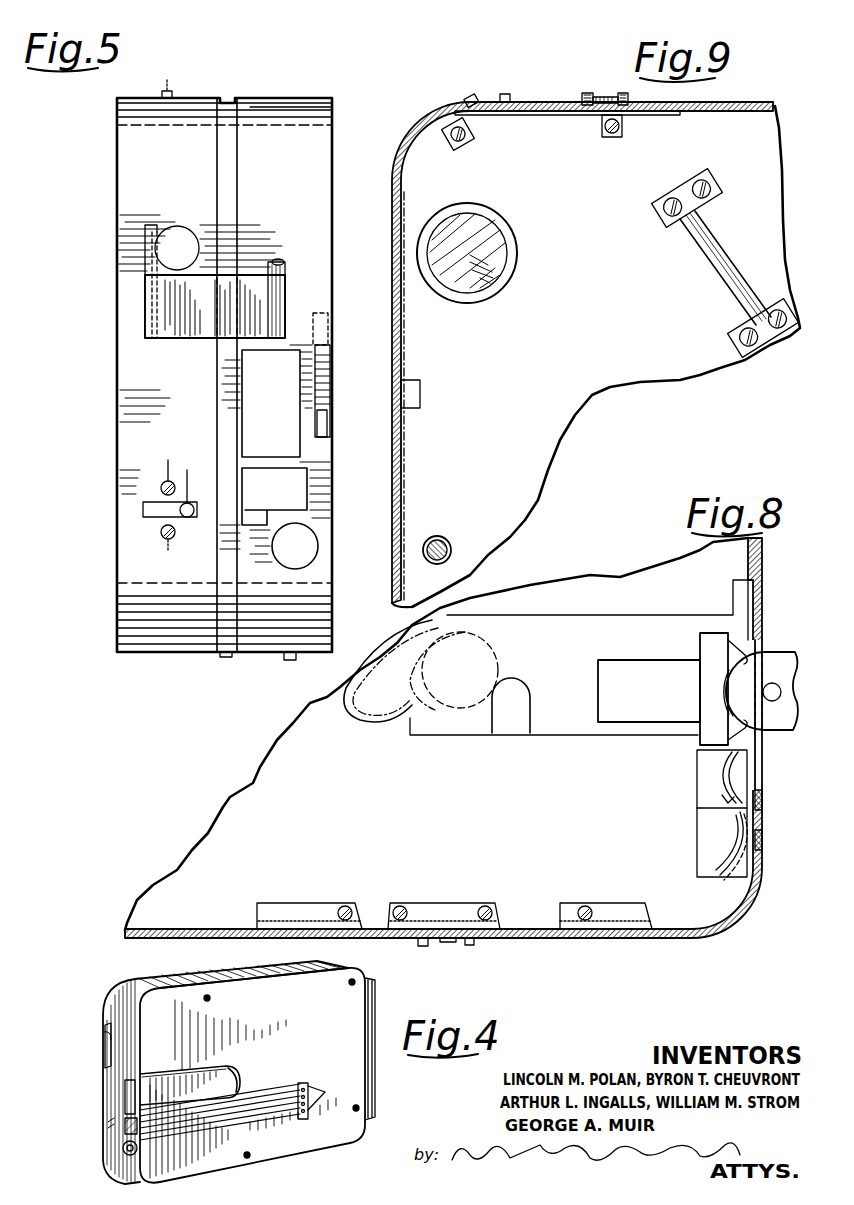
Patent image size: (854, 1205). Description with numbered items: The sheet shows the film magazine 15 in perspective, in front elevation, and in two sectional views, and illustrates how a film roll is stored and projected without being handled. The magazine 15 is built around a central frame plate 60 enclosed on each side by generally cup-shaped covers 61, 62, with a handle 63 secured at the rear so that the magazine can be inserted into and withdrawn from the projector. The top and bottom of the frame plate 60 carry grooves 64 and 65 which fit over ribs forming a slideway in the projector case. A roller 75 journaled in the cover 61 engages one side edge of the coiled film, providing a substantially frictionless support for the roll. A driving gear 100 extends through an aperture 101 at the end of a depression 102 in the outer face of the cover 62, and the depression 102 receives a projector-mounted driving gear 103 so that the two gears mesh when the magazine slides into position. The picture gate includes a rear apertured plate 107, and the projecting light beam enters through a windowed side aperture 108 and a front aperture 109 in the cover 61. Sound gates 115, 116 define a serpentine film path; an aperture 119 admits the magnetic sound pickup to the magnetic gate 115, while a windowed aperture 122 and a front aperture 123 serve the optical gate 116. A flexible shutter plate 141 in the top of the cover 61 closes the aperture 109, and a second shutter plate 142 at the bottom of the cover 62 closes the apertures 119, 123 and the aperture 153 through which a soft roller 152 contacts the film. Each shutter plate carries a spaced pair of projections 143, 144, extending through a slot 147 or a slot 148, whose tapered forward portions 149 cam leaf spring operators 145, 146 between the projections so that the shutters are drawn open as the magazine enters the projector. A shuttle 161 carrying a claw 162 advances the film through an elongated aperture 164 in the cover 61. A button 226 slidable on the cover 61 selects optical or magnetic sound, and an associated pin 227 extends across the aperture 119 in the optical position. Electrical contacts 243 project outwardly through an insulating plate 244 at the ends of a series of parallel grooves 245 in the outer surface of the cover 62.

In FIG. 5, the magazine 15 is at (336, 112).
In FIG. 4, the magazine 15 is at (318, 1155).
In FIG. 5, the cover 61 is at (120, 165).
In FIG. 9, the cover 61 is at (586, 398).
In FIG. 4, the cover 61 is at (122, 985).
In FIG. 5, the cover 62 is at (300, 104).
In FIG. 8, the cover 62 is at (590, 580).
In FIG. 4, the cover 62 is at (343, 974).
In FIG. 5, the central frame plate 60 is at (232, 122).
In FIG. 5, the groove 64 is at (226, 97).
In FIG. 5, the groove 65 is at (226, 656).
In FIG. 4, the handle 63 is at (376, 1060).
In FIG. 9, the roller 75 is at (716, 258).
In FIG. 5, the driving gear 100 is at (331, 392).
In FIG. 8, the driving gear 100 is at (380, 722).
In FIG. 4, the driving gear 100 is at (223, 1078).
In FIG. 5, the aperture 101 is at (331, 368).
In FIG. 4, the aperture 101 is at (238, 1085).
In FIG. 4, the depression 102 is at (192, 1075).
In FIG. 8, the driving gear 103 is at (445, 722).
In FIG. 5, the rear apertured plate 107 is at (328, 434).
In FIG. 9, the windowed side aperture 108 is at (492, 224).
In FIG. 5, the front aperture 109 is at (178, 227).
In FIG. 9, the front aperture 109 is at (394, 230).
In FIG. 4, the front aperture 109 is at (104, 1040).
In FIG. 8, the sound gate 115 is at (720, 776).
In FIG. 8, the sound gate 116 is at (732, 836).
In FIG. 5, the aperture 119 is at (305, 490).
In FIG. 8, the aperture 119 is at (763, 792).
In FIG. 4, the aperture 119 is at (124, 1132).
In FIG. 9, the windowed aperture 122 is at (440, 556).
In FIG. 5, the aperture 123 is at (316, 545).
In FIG. 8, the aperture 123 is at (760, 850).
In FIG. 4, the aperture 123 is at (127, 1155).
In FIG. 9, the shutter plate 141 is at (416, 150).
In FIG. 8, the shutter plate 142 is at (693, 922).
In FIG. 9, the projection 143 is at (468, 99).
In FIG. 8, the projection 143 is at (475, 944).
In FIG. 9, the projection 144 is at (505, 94).
In FIG. 8, the projection 144 is at (423, 946).
In FIG. 9, the leaf spring operator 145 is at (604, 97).
In FIG. 8, the leaf spring operator 146 is at (456, 944).
In FIG. 9, the slot 147 is at (532, 108).
In FIG. 8, the slot 148 is at (596, 938).
In FIG. 9, the tapered forward portion 149 is at (578, 113).
In FIG. 8, the tapered forward portion 149 is at (505, 903).
In FIG. 8, the soft roller 152 is at (777, 654).
In FIG. 5, the aperture 153 is at (245, 392).
In FIG. 5, the shuttle 161 is at (286, 266).
In FIG. 5, the claw 162 is at (188, 339).
In FIG. 5, the elongated aperture 164 is at (150, 272).
In FIG. 5, the button 226 is at (191, 518).
In FIG. 5, the pin 227 is at (250, 510).
In FIG. 4, the electrical contacts 243 is at (312, 1104).
In FIG. 4, the insulating plate 244 is at (303, 1084).
In FIG. 4, the parallel grooves 245 is at (236, 1122).